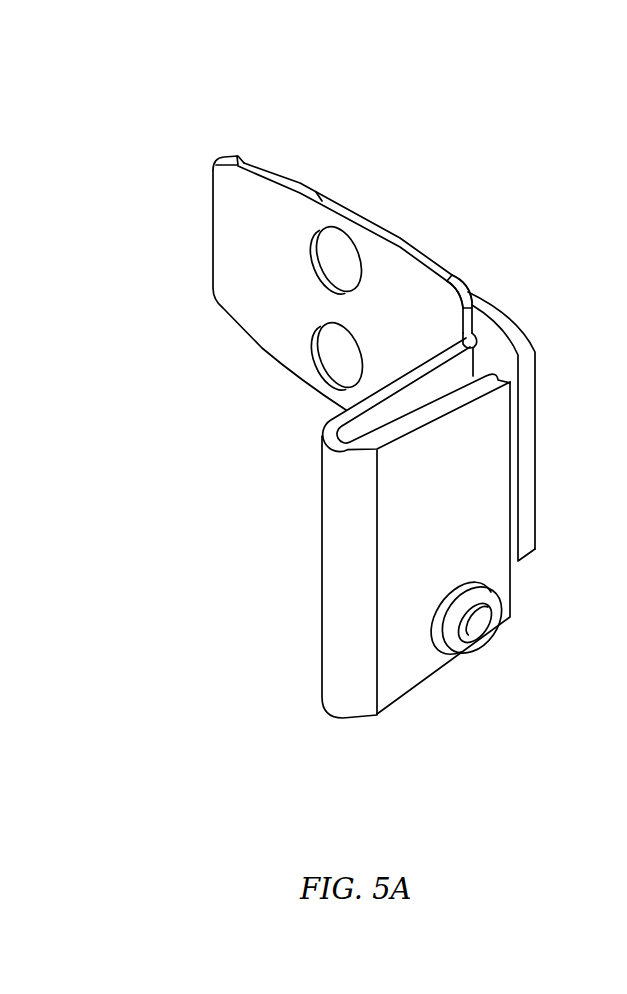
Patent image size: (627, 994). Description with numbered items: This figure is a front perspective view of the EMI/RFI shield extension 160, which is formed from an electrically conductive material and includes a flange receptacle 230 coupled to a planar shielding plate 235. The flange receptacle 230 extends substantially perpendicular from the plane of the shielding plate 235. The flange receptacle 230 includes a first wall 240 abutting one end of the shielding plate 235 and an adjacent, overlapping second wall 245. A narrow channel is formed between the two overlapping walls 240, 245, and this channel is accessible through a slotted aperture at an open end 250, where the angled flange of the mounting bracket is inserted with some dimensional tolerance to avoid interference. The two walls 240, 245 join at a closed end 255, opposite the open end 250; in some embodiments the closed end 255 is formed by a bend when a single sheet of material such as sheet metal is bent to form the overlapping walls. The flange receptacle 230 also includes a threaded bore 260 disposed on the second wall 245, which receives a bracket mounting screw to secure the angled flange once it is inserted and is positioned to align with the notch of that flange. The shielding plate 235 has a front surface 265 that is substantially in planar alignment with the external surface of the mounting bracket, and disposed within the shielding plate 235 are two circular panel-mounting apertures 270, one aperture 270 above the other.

The EMI/RFI shield extension 160 is at (424, 93).
The flange receptacle 230 is at (304, 561).
The shielding plate 235 is at (365, 227).
The first wall 240 is at (494, 352).
The second wall 245 is at (417, 683).
The open end 250 is at (534, 341).
The closed end 255 is at (324, 685).
The threaded bore 260 is at (503, 615).
The front surface 265 is at (277, 210).
The panel-mounting apertures 270 is at (312, 273).